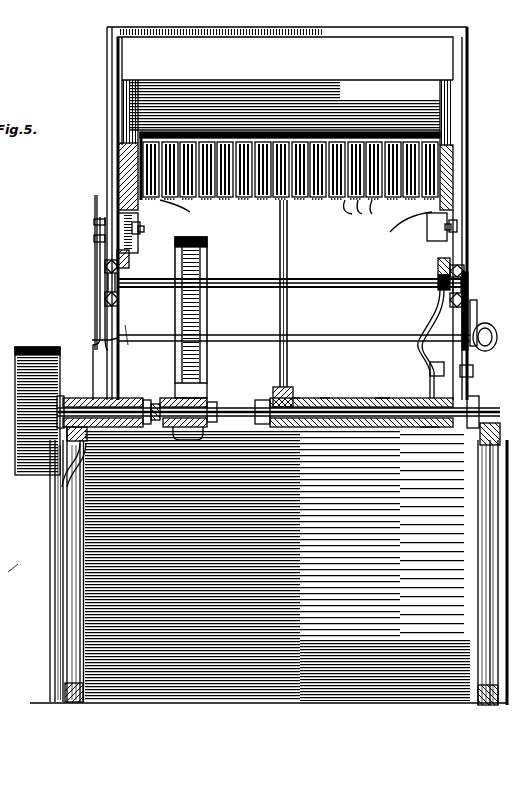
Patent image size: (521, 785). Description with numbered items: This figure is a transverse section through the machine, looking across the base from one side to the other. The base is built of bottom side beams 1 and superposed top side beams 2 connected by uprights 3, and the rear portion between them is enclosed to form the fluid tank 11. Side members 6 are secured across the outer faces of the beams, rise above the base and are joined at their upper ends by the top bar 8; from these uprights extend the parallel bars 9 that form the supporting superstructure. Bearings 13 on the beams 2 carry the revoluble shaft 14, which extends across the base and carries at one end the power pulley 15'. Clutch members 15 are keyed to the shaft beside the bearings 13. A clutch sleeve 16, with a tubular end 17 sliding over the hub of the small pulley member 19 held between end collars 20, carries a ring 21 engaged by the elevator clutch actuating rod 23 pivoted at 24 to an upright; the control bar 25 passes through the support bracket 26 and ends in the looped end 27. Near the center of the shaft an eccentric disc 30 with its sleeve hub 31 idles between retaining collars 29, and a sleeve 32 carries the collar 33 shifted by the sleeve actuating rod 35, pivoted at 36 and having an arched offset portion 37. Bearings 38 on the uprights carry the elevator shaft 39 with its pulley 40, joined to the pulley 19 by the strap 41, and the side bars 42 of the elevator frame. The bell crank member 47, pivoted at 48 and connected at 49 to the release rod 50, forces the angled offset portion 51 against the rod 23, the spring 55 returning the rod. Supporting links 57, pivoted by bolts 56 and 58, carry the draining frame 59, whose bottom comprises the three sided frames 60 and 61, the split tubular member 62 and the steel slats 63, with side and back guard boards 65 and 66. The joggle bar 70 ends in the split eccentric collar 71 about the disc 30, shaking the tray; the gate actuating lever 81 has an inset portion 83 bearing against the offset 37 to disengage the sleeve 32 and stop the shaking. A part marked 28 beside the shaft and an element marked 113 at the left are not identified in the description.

The bottom side beams 1 is at (66, 692).
The top side beams 2 is at (76, 444).
The uprights 3 is at (78, 600).
The side members 6 is at (107, 152).
The top bar 8 is at (284, 36).
The parallel bars 9 is at (130, 263).
The fluid tank 11 is at (412, 632).
The bearings 13 is at (80, 402).
The revoluble shaft 14 is at (237, 407).
The clutch member 15 is at (263, 407).
The power pulley 15' is at (37, 400).
The clutch sleeve 16 is at (141, 397).
The tubular end 17 is at (150, 400).
The pulley member 19 is at (195, 383).
The end collars 20 is at (133, 380).
The ring 21 is at (130, 432).
The elevator clutch actuating rod 23 is at (118, 339).
The pivot 24 is at (292, 276).
The control bar 25 is at (247, 334).
The support bracket 26 is at (470, 318).
The looped end 27 is at (489, 330).
The nut 28 is at (188, 400).
The retaining collars 29 is at (262, 398).
The eccentric disc 30 is at (293, 398).
The sleeve hub 31 is at (325, 396).
The sleeve 32 is at (381, 398).
The collar 33 is at (430, 430).
The sleeve actuating rod 35 is at (437, 301).
The pivot 36 is at (438, 282).
The arched offset portion 37 is at (418, 334).
The bearings 38 is at (105, 296).
The elevator shaft 39 is at (245, 292).
The pulley 40 is at (207, 276).
The strap 41 is at (198, 372).
The side bars 42 is at (105, 313).
The bell crank member 47 is at (120, 200).
The pivot 48 is at (94, 238).
The pivotal connection 49 is at (94, 221).
The release rod 50 is at (100, 253).
The angled offset portion 51 is at (125, 332).
The spring 55 is at (86, 456).
The bolts 56 is at (140, 231).
The supporting links 57 is at (138, 223).
The bolts 58 is at (445, 228).
The draining frame 59 is at (244, 84).
The three sided frame 60 is at (128, 190).
The three sided frame 61 is at (296, 221).
The tubular member 62 is at (372, 136).
The steel slats 63 is at (358, 212).
The side guard boards 65 is at (320, 92).
The back guard board 66 is at (110, 98).
The joggle bar 70 is at (286, 252).
The split eccentric collar 71 is at (286, 385).
The gate actuating lever 81 is at (476, 374).
The inset portion 83 is at (437, 360).
The bracket 113 is at (12, 562).